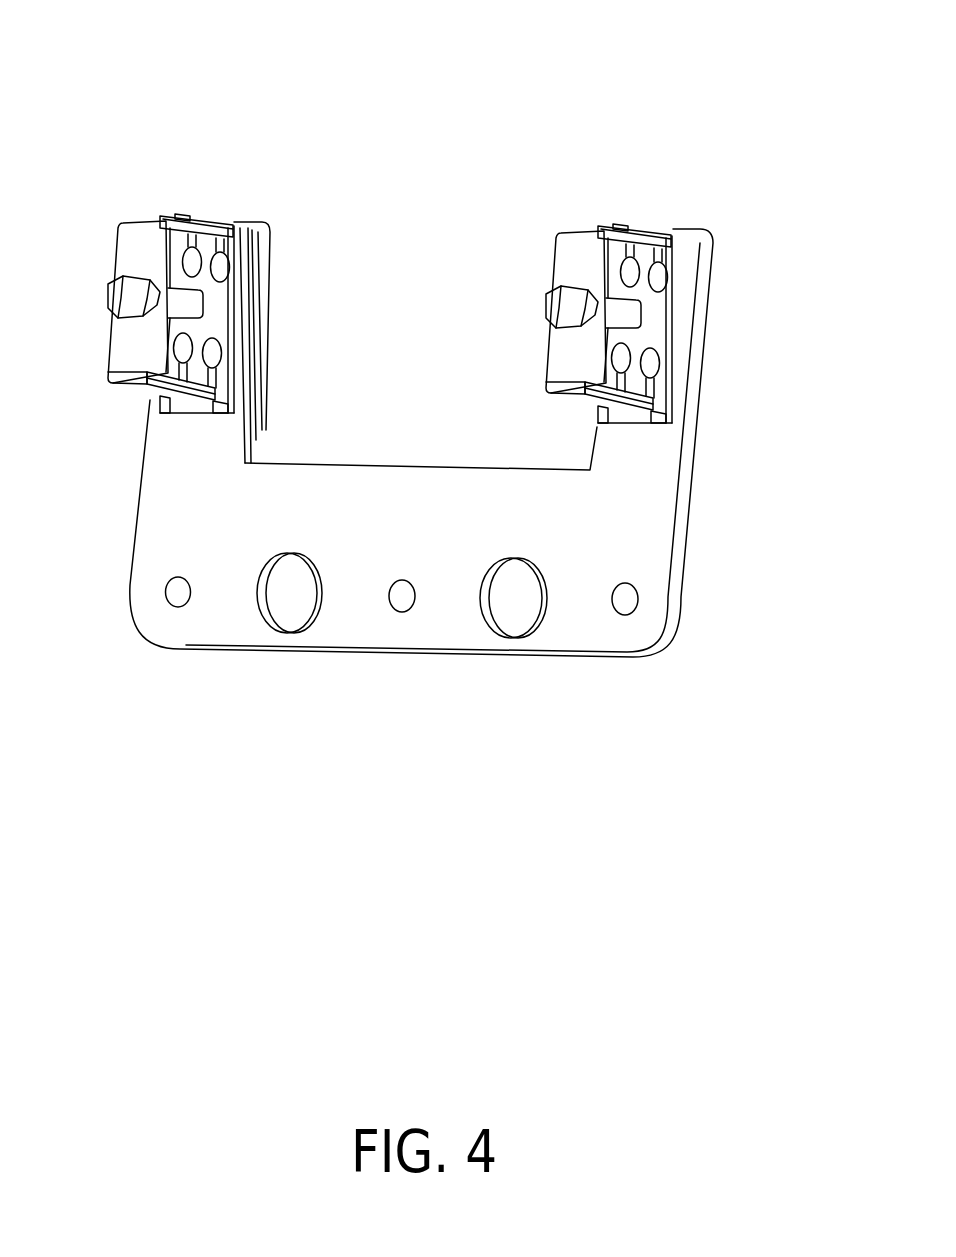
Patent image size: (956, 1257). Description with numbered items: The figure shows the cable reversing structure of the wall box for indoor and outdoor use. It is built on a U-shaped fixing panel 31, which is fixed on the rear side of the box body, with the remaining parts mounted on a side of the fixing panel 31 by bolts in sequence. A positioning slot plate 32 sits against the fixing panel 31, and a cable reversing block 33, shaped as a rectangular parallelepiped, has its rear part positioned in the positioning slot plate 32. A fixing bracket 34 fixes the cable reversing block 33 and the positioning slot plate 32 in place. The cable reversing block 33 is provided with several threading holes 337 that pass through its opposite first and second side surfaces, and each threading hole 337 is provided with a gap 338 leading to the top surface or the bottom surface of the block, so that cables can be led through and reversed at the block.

The fixing panel 31 is at (585, 535).
The positioning slot plate 32 is at (237, 288).
The cable reversing block 33 is at (543, 276).
The fixing bracket 34 is at (424, 196).
The threading hole 337 is at (742, 395).
The gap 338 is at (695, 467).